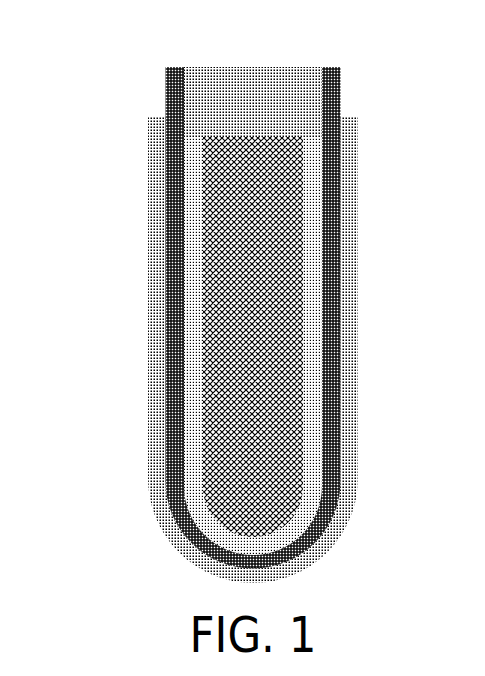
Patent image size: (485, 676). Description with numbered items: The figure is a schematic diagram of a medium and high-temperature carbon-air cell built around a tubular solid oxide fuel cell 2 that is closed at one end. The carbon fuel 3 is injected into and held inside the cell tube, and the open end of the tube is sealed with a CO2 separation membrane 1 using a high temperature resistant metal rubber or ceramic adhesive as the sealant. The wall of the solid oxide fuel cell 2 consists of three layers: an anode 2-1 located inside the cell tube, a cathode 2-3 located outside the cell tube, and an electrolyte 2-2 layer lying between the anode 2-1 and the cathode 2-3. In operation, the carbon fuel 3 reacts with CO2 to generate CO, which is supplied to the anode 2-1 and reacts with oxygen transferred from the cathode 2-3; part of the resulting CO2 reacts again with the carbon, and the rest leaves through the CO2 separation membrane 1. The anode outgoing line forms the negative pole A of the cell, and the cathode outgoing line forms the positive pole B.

The negative pole A is at (256, 277).
The positive pole B is at (247, 325).
The CO2 separation membrane 1 is at (222, 87).
The solid oxide fuel cell 2 is at (200, 325).
The anode 2-1 is at (193, 190).
The electrolyte 2-2 is at (175, 277).
The cathode 2-3 is at (152, 350).
The carbon fuel 3 is at (218, 450).